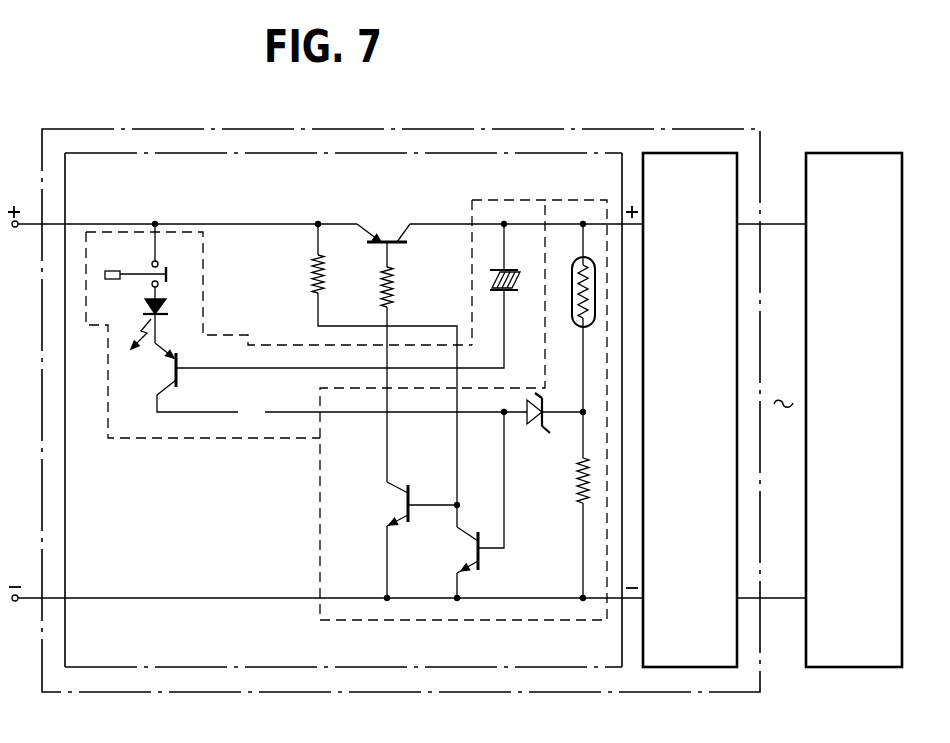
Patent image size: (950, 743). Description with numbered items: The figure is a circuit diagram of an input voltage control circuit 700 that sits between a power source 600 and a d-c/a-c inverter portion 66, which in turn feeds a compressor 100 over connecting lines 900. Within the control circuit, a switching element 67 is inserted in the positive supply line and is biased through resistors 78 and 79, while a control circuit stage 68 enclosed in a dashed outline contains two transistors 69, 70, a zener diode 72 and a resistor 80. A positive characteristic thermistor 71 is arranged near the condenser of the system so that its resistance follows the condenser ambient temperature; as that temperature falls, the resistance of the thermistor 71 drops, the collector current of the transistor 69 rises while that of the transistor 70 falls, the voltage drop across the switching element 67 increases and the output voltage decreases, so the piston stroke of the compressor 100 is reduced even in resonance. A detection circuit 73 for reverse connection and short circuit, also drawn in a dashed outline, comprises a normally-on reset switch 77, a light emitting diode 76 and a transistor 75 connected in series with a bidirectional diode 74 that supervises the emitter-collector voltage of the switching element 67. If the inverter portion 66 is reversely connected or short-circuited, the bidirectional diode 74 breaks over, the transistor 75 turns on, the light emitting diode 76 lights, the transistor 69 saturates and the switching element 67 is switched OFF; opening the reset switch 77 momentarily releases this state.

The power source 600 is at (597, 129).
The input voltage control circuit 700 is at (455, 153).
The d-c/a-c inverter portion 66 is at (683, 153).
The compressor 100 is at (852, 153).
The connecting lines 900 is at (778, 223).
The switching element 67 is at (385, 240).
The control circuit stage 68 is at (320, 518).
The transistor 69 is at (483, 560).
The transistor 70 is at (410, 495).
The positive characteristic thermistor 71 is at (580, 328).
The zener diode 72 is at (535, 427).
The detection circuit for reverse connection and shortcircuit 73 is at (190, 438).
The bidirectional diode 74 is at (507, 291).
The transistor 75 is at (172, 364).
The light emitting diode 76 is at (143, 303).
The reset switch 77 is at (153, 262).
The resistor 78 is at (315, 272).
The resistor 79 is at (391, 285).
The resistor 80 is at (580, 480).